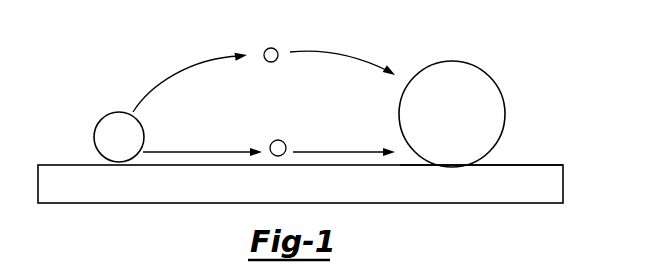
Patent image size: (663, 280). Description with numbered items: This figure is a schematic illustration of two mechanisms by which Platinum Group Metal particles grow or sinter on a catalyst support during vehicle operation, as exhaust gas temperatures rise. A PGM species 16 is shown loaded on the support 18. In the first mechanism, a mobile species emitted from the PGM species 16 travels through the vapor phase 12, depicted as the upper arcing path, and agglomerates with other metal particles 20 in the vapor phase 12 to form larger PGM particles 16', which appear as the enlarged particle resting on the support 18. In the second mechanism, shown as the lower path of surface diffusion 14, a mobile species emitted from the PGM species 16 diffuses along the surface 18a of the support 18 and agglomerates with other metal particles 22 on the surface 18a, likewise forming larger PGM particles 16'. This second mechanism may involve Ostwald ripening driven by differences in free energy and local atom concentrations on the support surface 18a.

The vapor phase 12 is at (259, 36).
The surface diffusion 14 is at (265, 125).
The PGM species 16 is at (101, 129).
The larger PGM particles 16' is at (483, 114).
The support 18 is at (58, 193).
The surface of the support 18a is at (537, 165).
The metal particles in the vapor phase 20 is at (274, 62).
The metal particles on the surface 22 is at (282, 140).